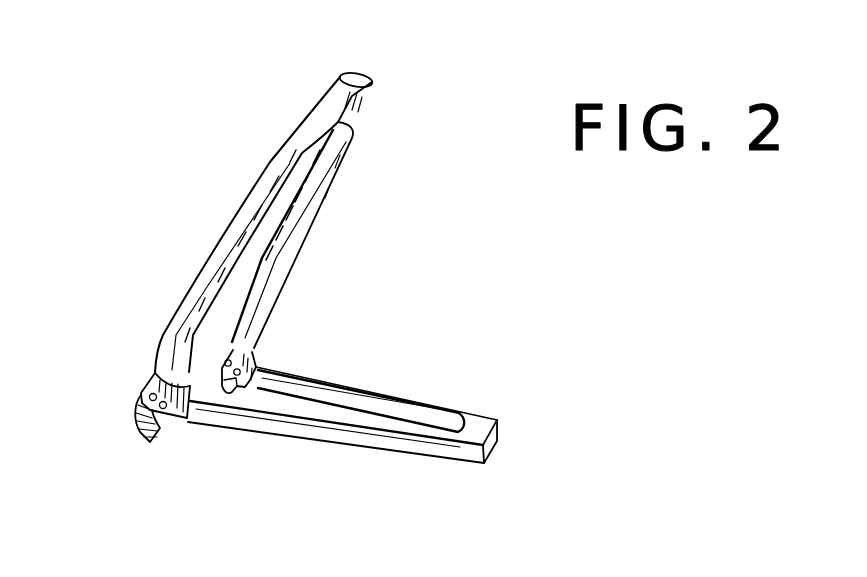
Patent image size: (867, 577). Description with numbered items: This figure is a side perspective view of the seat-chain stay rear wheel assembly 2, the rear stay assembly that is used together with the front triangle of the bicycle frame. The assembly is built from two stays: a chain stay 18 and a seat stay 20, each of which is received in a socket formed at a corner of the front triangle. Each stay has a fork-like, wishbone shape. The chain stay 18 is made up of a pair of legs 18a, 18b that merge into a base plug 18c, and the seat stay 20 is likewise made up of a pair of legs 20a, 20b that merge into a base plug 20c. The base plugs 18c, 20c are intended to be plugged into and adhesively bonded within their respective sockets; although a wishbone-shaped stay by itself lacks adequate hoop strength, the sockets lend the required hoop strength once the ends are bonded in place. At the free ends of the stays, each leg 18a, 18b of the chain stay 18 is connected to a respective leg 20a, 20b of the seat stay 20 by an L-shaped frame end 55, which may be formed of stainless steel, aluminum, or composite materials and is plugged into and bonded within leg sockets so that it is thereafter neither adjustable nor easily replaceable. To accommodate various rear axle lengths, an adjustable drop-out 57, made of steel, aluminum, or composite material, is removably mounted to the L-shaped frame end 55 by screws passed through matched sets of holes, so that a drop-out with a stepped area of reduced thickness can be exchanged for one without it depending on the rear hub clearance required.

The seat-chain stay rear wheel assembly 2 is at (397, 289).
The chain stay 18 is at (466, 403).
The leg of chain stay 18a is at (346, 437).
The leg of chain stay 18b is at (341, 394).
The base plug of chain stay 18c is at (501, 422).
The seat stay 20 is at (302, 115).
The leg of seat stay 20a is at (230, 236).
The leg of seat stay 20b is at (320, 186).
The base plug of seat stay 20c is at (362, 74).
The L-shaped frame end 55 is at (150, 380).
The adjustable drop-out 57 is at (136, 422).